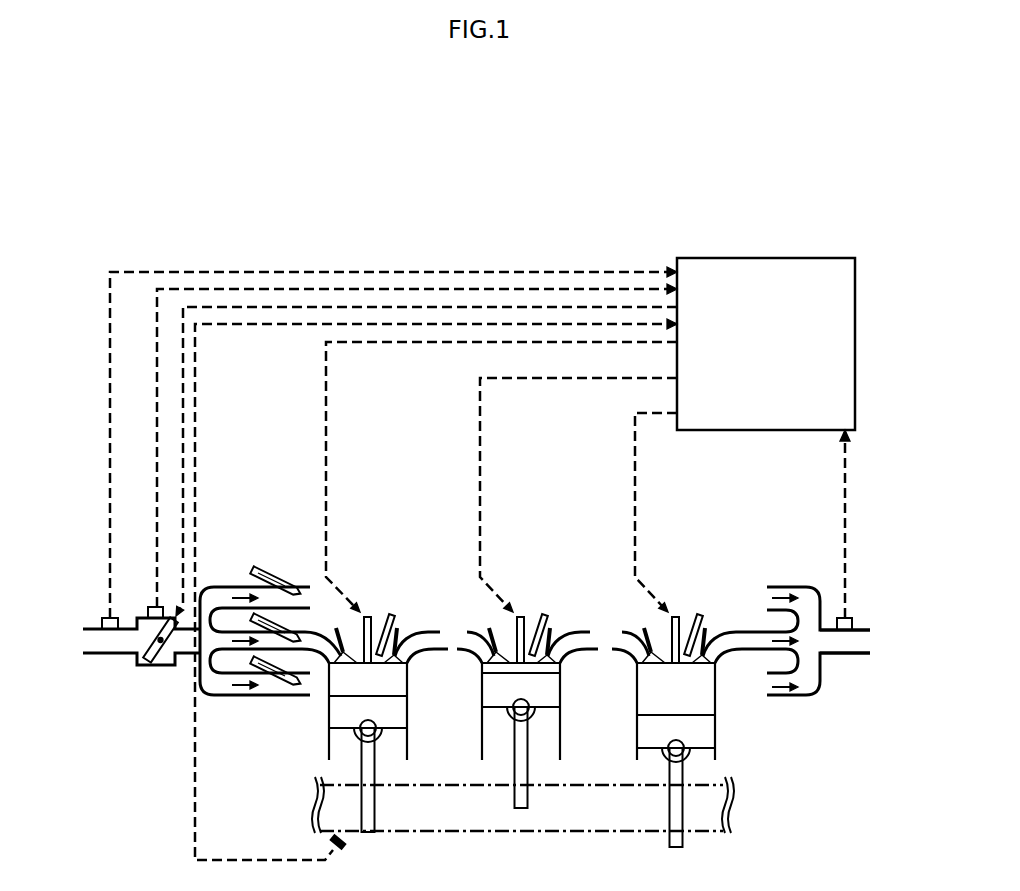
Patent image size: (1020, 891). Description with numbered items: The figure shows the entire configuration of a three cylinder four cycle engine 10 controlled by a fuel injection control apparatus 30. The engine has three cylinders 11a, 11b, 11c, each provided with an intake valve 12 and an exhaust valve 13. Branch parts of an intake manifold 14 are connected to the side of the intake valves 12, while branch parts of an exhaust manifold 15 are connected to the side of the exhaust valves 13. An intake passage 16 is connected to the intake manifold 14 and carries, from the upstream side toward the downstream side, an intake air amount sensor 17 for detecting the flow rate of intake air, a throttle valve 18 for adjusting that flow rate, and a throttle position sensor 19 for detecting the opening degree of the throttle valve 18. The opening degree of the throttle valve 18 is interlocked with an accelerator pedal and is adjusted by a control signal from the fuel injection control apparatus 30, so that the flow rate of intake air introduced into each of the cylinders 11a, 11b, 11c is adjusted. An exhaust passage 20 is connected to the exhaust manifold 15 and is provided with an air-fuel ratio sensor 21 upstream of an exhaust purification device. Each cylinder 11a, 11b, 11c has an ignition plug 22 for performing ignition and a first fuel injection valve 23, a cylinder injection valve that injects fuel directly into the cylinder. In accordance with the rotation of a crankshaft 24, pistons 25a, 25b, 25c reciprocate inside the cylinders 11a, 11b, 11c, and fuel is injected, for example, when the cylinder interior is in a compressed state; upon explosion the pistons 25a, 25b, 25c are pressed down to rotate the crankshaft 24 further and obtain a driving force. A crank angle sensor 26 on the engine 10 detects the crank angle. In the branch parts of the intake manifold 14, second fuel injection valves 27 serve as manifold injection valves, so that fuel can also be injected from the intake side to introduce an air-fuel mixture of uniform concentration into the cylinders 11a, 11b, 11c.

The engine 10 is at (185, 197).
The cylinder 11a is at (405, 683).
The cylinder 11b is at (560, 683).
The cylinder 11c is at (714, 695).
The intake valve 12 is at (337, 630).
The exhaust valve 13 is at (399, 630).
The intake manifold 14 is at (217, 585).
The exhaust manifold 15 is at (798, 587).
The intake passage 16 is at (92, 655).
The intake air amount sensor 17 is at (100, 622).
The throttle valve 18 is at (146, 660).
The throttle position sensor 19 is at (150, 608).
The exhaust passage 20 is at (838, 653).
The air-fuel ratio sensor 21 is at (855, 618).
The ignition plug 22 is at (367, 615).
The first fuel injection valve 23 is at (393, 613).
The crankshaft 24 is at (474, 831).
The piston 25a is at (329, 710).
The piston 25b is at (482, 710).
The piston 25c is at (637, 725).
The crank angle sensor 26 is at (350, 843).
The second fuel injection valve 27 is at (282, 660).
The fuel injection control apparatus 30 is at (832, 272).